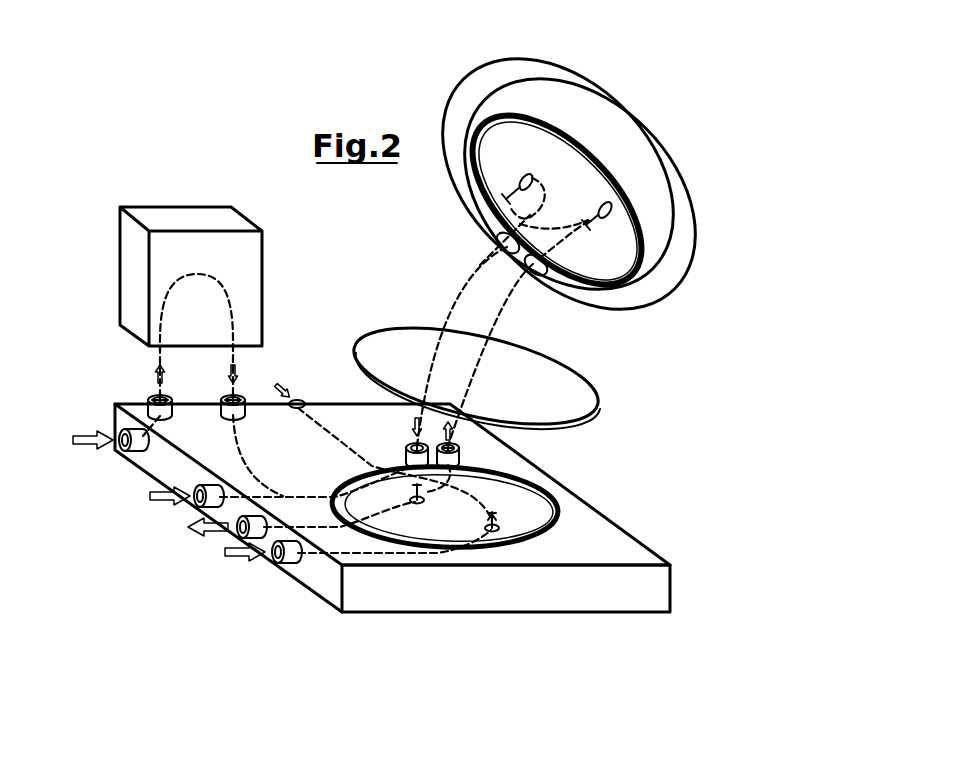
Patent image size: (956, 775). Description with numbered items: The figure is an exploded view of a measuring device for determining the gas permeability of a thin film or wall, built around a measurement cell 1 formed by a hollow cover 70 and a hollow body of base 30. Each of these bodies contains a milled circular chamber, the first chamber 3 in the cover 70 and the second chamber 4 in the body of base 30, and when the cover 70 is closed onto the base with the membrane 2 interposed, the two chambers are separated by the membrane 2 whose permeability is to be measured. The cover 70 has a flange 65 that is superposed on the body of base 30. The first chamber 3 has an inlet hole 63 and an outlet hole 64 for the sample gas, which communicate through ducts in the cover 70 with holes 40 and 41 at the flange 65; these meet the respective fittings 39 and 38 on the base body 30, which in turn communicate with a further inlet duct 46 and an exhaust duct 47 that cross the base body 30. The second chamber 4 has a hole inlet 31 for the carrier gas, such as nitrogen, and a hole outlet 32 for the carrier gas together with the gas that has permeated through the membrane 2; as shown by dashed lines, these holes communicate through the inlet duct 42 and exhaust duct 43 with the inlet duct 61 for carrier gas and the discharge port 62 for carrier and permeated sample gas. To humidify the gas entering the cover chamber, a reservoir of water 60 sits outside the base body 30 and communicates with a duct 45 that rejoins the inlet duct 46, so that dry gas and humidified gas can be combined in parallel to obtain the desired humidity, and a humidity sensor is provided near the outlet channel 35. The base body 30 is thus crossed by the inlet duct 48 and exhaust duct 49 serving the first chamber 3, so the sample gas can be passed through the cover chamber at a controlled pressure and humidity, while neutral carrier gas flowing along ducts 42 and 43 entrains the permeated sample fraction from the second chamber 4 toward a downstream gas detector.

The measurement cell 1 is at (632, 423).
The membrane 2 is at (393, 350).
The first chamber 3 is at (520, 143).
The second chamber 4 is at (515, 517).
The body of base 30 is at (620, 552).
The hole inlet 31 is at (493, 530).
The hole outlet 32 is at (418, 502).
The outlet channel 35 is at (302, 403).
The fitting 38 is at (410, 450).
The fitting 39 is at (462, 453).
The hole 40 is at (540, 270).
The hole 41 is at (497, 240).
The inlet duct 42 is at (367, 557).
The exhaust duct 43 is at (313, 530).
The duct 45 is at (244, 445).
The inlet duct 46 is at (262, 497).
The exhaust duct 47 is at (332, 440).
The inlet duct 48 is at (494, 306).
The exhaust duct 49 is at (447, 313).
The reservoir of water 60 is at (133, 257).
The inlet duct 61 is at (274, 560).
The discharge port 62 is at (233, 530).
The inlet hole 63 is at (596, 209).
The outlet hole 64 is at (530, 178).
The flange 65 is at (645, 278).
The cover 70 is at (660, 181).